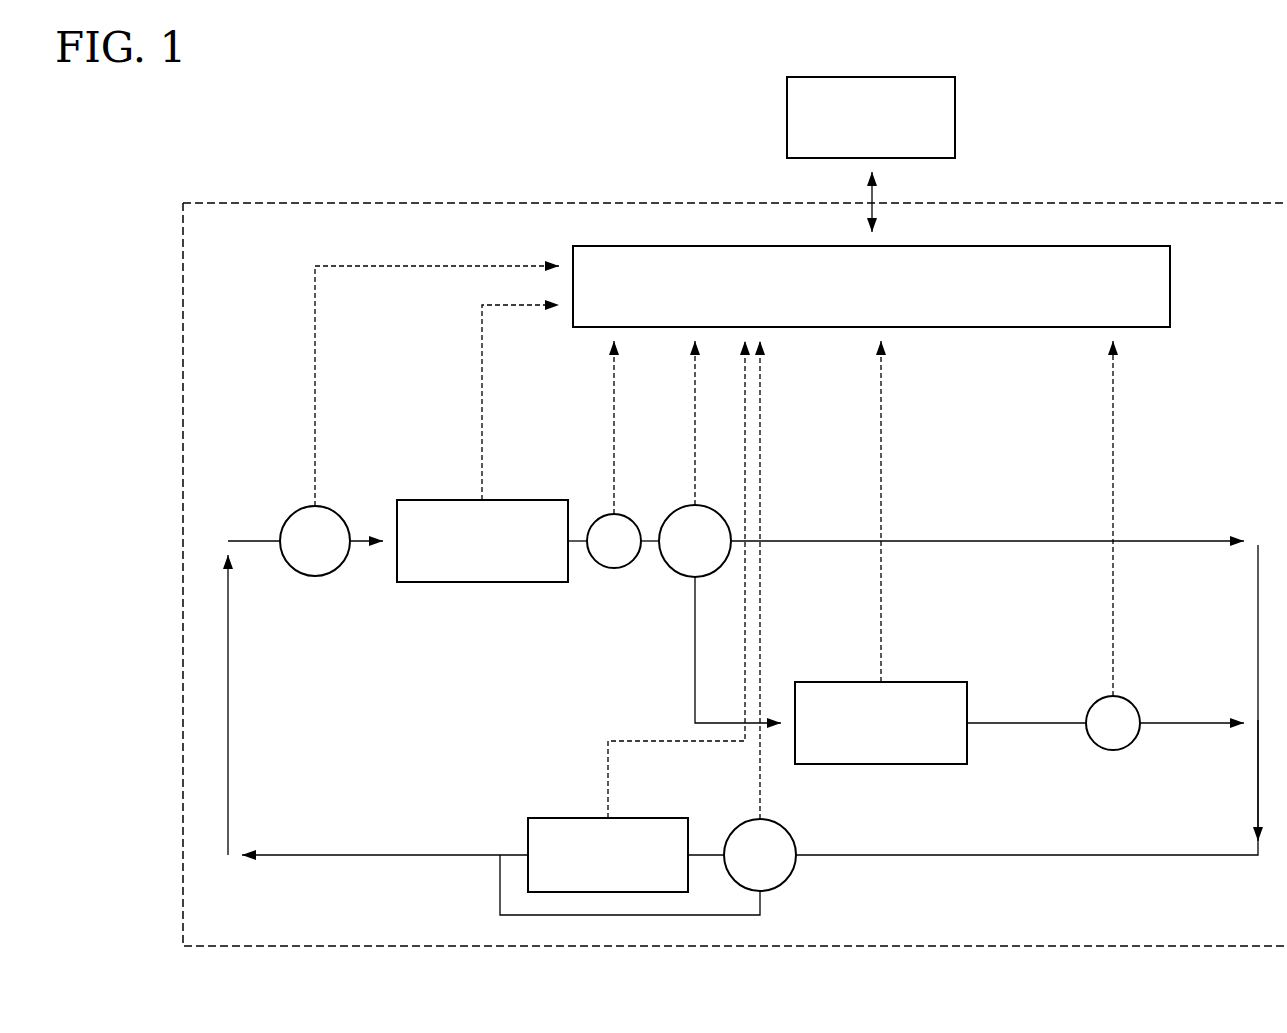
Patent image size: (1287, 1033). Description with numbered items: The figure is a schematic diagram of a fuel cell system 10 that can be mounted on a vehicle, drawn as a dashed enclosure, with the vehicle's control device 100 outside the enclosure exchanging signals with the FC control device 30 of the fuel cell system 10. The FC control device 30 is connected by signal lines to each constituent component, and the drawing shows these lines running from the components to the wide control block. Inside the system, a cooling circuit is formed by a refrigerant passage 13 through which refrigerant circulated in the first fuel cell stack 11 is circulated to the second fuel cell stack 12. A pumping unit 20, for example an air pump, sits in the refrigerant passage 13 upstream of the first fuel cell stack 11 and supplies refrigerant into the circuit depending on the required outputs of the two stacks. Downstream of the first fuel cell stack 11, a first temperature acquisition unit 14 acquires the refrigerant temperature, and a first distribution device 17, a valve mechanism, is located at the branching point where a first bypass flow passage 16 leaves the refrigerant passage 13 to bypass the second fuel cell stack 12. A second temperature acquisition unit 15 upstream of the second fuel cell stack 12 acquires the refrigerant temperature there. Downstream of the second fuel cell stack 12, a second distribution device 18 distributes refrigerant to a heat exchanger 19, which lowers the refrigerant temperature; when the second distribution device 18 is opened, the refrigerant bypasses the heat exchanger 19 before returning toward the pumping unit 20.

The fuel cell system 10 is at (305, 166).
The control device 100 is at (787, 114).
The FC control device 30 is at (1137, 246).
The pumping unit 20 is at (335, 508).
The refrigerant passage 13 is at (362, 538).
The first fuel cell stack 11 is at (513, 500).
The first temperature acquisition unit 14 is at (628, 514).
The first distribution device 17 is at (705, 505).
The first bypass flow passage 16 is at (808, 540).
The second fuel cell stack 12 is at (935, 682).
The second temperature acquisition unit 15 is at (1135, 705).
The heat exchanger 19 is at (645, 818).
The second distribution device 18 is at (790, 836).